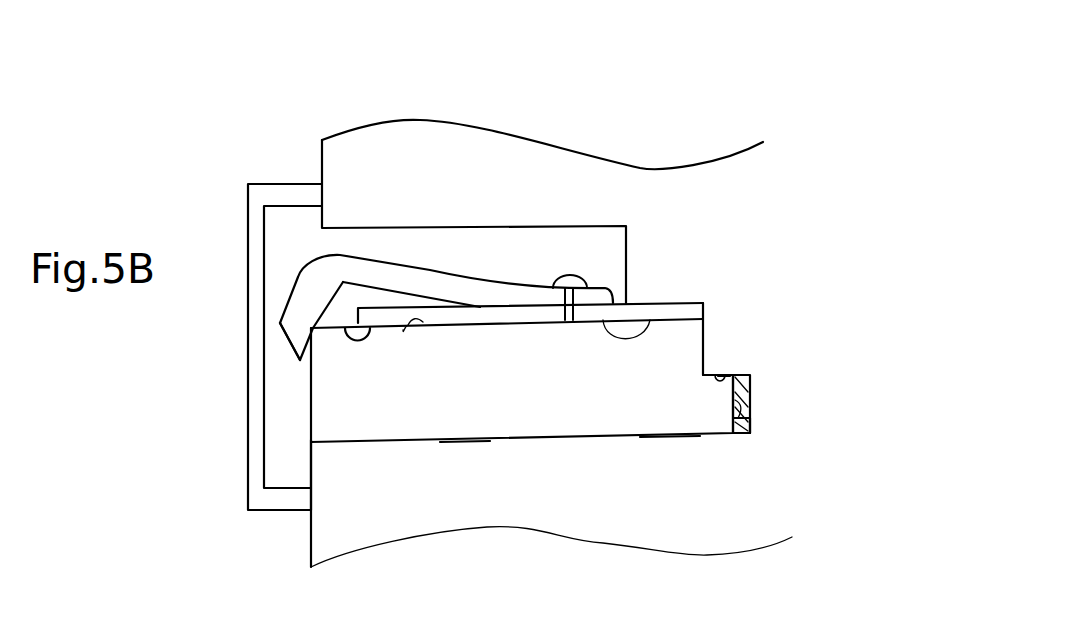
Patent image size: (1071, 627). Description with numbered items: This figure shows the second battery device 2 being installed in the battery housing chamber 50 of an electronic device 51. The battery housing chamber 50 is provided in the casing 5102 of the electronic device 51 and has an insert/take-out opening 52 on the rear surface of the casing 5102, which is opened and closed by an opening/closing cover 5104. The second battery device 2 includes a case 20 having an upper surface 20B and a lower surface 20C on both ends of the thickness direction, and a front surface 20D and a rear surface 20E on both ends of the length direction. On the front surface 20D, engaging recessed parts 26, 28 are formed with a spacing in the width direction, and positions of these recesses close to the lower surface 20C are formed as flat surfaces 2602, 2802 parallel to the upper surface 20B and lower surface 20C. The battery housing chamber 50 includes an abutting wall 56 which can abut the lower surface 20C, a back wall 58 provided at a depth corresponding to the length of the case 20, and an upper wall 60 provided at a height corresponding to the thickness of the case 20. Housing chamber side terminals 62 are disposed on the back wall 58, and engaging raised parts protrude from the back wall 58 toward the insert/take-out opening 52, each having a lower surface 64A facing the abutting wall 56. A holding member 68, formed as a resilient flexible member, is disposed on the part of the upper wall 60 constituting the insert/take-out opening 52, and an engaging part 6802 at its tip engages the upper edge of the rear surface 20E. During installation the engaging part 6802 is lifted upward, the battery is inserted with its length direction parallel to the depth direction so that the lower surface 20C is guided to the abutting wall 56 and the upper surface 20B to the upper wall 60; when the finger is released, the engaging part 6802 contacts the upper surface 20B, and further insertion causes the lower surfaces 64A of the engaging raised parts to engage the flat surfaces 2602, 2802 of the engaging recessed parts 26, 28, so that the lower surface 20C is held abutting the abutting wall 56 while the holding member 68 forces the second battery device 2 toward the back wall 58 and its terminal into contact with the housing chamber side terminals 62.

The second battery device 2 is at (526, 460).
The case 20 is at (526, 460).
The upper surface 20B is at (403, 330).
The lower surface 20C is at (462, 440).
The front surface 20D is at (748, 435).
The rear surface 20E is at (310, 417).
The engaging recessed part 26 is at (806, 309).
The flat surface 2602 is at (718, 378).
The engaging recessed part 28 is at (718, 378).
The flat surface 2802 is at (710, 372).
The battery housing chamber 50 is at (708, 278).
The electronic device 51 is at (515, 171).
The casing 5102 is at (322, 163).
The opening/closing cover 5104 is at (248, 207).
The insert/take-out opening 52 is at (346, 327).
The abutting wall 56 is at (662, 424).
The back wall 58 is at (747, 425).
The upper wall 60 is at (650, 320).
The housing chamber side terminal 62 is at (750, 378).
The lower surface 64A is at (811, 342).
The holding member 68 is at (381, 240).
The engaging part 6802 is at (282, 335).